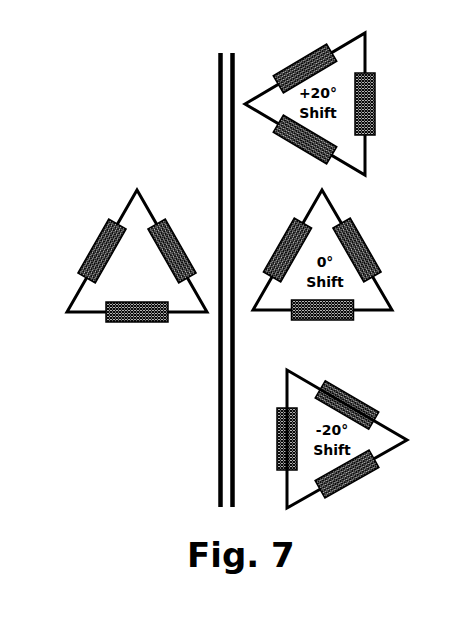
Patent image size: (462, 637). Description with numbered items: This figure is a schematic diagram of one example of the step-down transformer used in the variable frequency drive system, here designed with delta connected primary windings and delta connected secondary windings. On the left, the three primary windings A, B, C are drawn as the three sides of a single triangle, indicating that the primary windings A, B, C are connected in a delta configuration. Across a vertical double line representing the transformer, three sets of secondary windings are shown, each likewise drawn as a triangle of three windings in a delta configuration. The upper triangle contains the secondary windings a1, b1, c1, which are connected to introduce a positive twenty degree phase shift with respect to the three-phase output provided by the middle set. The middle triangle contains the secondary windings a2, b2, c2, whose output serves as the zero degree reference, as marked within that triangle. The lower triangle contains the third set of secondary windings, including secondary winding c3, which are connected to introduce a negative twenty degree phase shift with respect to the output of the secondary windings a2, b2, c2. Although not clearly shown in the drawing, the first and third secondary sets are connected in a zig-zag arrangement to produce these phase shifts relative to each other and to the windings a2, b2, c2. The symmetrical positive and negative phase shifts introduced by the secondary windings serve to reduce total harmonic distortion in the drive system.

The primary winding A is at (100, 251).
The primary winding B is at (172, 251).
The primary winding C is at (137, 327).
The secondary winding a1 is at (294, 256).
The secondary winding b1 is at (380, 104).
The secondary winding c1 is at (305, 146).
The secondary winding a2 is at (281, 250).
The secondary winding b2 is at (352, 323).
The secondary winding c2 is at (323, 323).
The secondary winding c3 is at (347, 477).